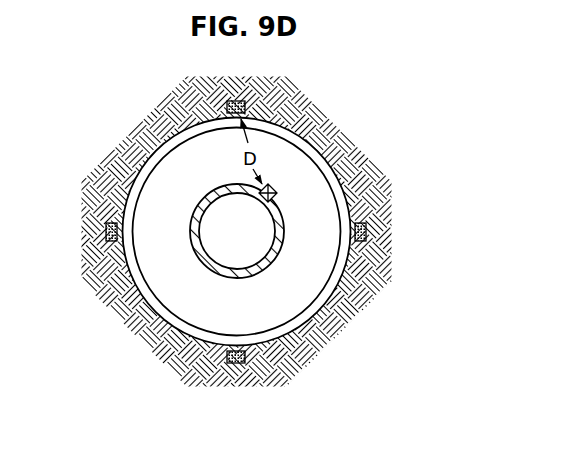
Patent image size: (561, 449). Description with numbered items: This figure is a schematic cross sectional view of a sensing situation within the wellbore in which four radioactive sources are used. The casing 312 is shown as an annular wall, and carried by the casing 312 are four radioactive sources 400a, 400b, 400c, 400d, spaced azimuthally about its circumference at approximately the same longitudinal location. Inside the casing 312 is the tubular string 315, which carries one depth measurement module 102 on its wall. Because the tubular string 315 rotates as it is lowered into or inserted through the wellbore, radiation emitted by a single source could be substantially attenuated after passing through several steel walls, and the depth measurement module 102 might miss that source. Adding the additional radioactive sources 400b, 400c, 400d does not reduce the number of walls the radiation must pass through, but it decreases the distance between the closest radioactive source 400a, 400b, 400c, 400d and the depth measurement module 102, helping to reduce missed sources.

The casing 312 is at (322, 328).
The tubular string 315 is at (246, 279).
The depth measurement module 102 is at (281, 191).
The radioactive source 400a is at (105, 231).
The radioactive source 400b is at (367, 232).
The radioactive source 400c is at (240, 100).
The radioactive source 400d is at (236, 364).